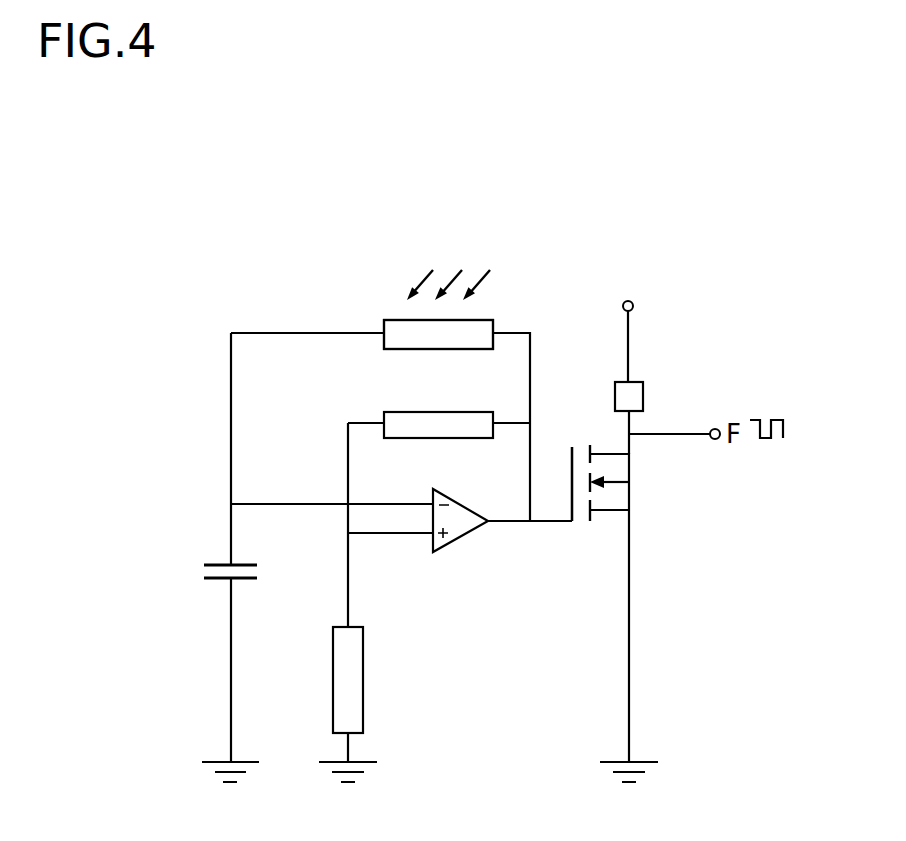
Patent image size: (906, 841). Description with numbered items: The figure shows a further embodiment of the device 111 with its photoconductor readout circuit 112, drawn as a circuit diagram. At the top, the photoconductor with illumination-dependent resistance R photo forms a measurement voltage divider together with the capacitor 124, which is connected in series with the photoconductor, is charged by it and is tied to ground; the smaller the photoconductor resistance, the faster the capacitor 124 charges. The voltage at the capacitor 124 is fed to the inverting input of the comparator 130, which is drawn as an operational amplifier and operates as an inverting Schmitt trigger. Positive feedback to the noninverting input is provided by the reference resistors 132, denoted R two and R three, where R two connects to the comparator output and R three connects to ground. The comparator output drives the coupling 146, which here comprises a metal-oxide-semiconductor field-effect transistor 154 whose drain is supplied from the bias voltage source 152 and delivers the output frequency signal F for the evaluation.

The device 111 is at (350, 288).
The photoconductor readout circuit 112 is at (379, 268).
The capacitor 124 is at (222, 585).
The comparator 130 is at (457, 540).
The reference resistors 132 is at (420, 438).
The coupling 146 is at (652, 474).
The bias voltage source 152 is at (662, 308).
The metal-oxide-semiconductor field-effect transistor 154 is at (594, 422).